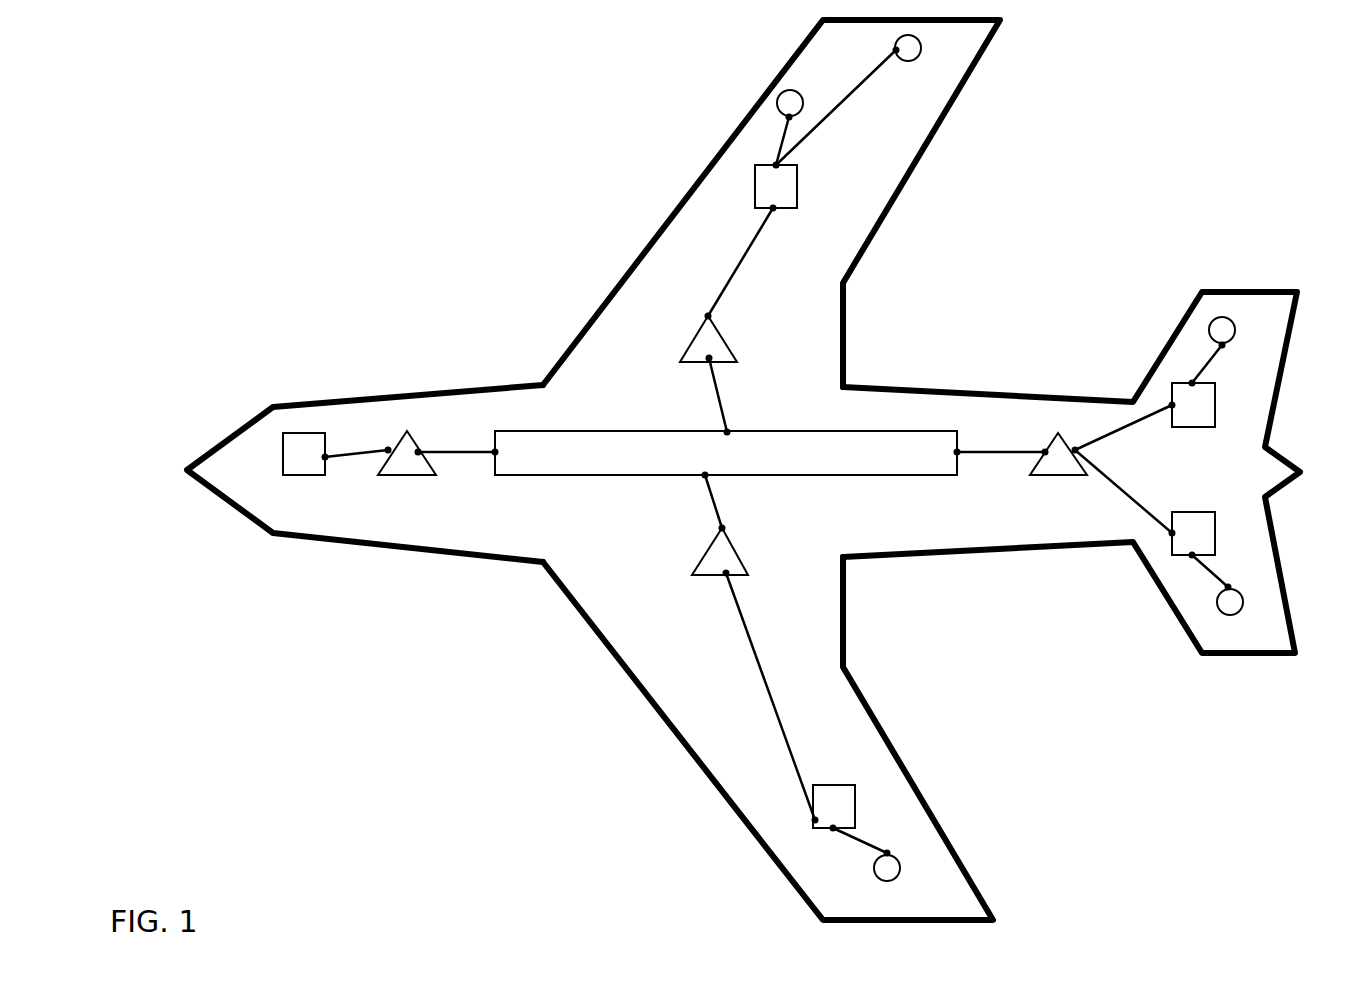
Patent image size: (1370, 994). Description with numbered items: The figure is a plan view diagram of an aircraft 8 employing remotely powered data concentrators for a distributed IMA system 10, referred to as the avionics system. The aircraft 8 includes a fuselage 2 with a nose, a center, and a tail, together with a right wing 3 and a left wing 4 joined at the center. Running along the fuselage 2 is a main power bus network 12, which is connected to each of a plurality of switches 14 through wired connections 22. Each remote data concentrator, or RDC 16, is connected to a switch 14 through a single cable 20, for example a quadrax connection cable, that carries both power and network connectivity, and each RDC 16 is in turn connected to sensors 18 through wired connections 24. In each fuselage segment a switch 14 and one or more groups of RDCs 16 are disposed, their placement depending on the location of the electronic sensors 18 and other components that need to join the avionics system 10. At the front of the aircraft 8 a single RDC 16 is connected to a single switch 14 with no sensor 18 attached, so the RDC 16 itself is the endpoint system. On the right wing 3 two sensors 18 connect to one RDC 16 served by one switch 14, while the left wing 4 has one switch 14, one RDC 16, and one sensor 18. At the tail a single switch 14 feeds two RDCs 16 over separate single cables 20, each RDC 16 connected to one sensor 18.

The fuselage 2 is at (350, 395).
The right wing 3 is at (650, 248).
The left wing 4 is at (643, 692).
The aircraft 8 is at (253, 380).
The distributed IMA system 10 is at (226, 103).
The main power bus network 12 is at (903, 432).
The switch 14 is at (708, 340).
The remote data concentrator 16 is at (755, 173).
The sensor 18 is at (770, 100).
The single cable 20 is at (745, 262).
The wired connection 22 is at (718, 395).
The wired connection 24 is at (860, 835).